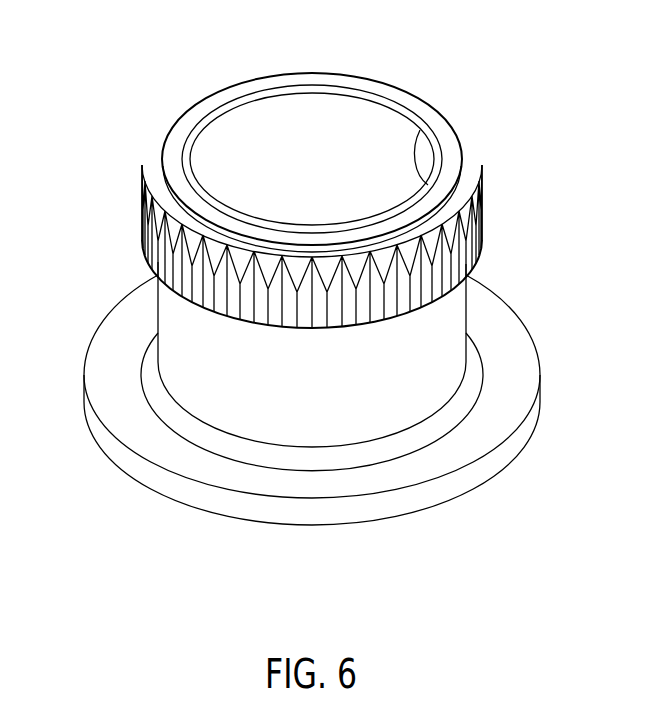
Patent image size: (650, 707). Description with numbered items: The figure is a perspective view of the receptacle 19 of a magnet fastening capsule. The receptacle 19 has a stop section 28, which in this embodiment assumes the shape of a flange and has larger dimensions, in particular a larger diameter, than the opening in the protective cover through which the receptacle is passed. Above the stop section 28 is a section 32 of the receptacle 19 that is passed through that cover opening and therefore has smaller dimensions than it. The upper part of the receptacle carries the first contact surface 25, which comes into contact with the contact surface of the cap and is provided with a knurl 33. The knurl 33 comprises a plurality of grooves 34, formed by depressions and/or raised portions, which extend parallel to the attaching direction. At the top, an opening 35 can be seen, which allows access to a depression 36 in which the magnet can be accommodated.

The receptacle 19 is at (160, 105).
The first contact surface 25 is at (490, 190).
The stop section 28 is at (200, 468).
The section 32 is at (143, 320).
The knurl 33 is at (314, 342).
The grooves 34 is at (465, 246).
The opening 35 is at (337, 126).
The depression 36 is at (420, 135).